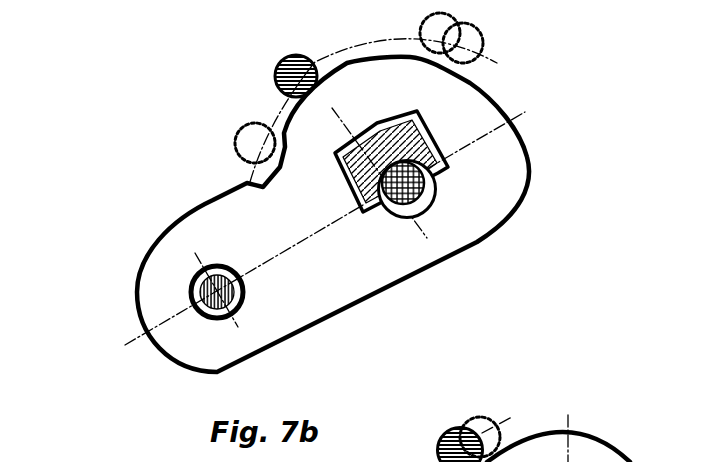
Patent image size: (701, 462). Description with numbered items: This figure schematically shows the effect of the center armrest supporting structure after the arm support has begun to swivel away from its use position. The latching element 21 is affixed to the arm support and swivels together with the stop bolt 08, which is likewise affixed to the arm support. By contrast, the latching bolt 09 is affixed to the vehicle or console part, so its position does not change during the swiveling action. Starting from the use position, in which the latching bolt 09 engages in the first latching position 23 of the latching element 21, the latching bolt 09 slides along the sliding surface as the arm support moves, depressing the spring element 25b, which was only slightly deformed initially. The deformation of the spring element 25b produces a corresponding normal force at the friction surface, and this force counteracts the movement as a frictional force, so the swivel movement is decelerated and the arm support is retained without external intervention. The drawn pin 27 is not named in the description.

The latching element 21 is at (347, 285).
The spring element 25b is at (423, 142).
The pivot pin 27 is at (430, 198).
The stop bolt 08 is at (190, 287).
The latching bolt 09 is at (276, 80).
The first latching position 23 is at (250, 124).